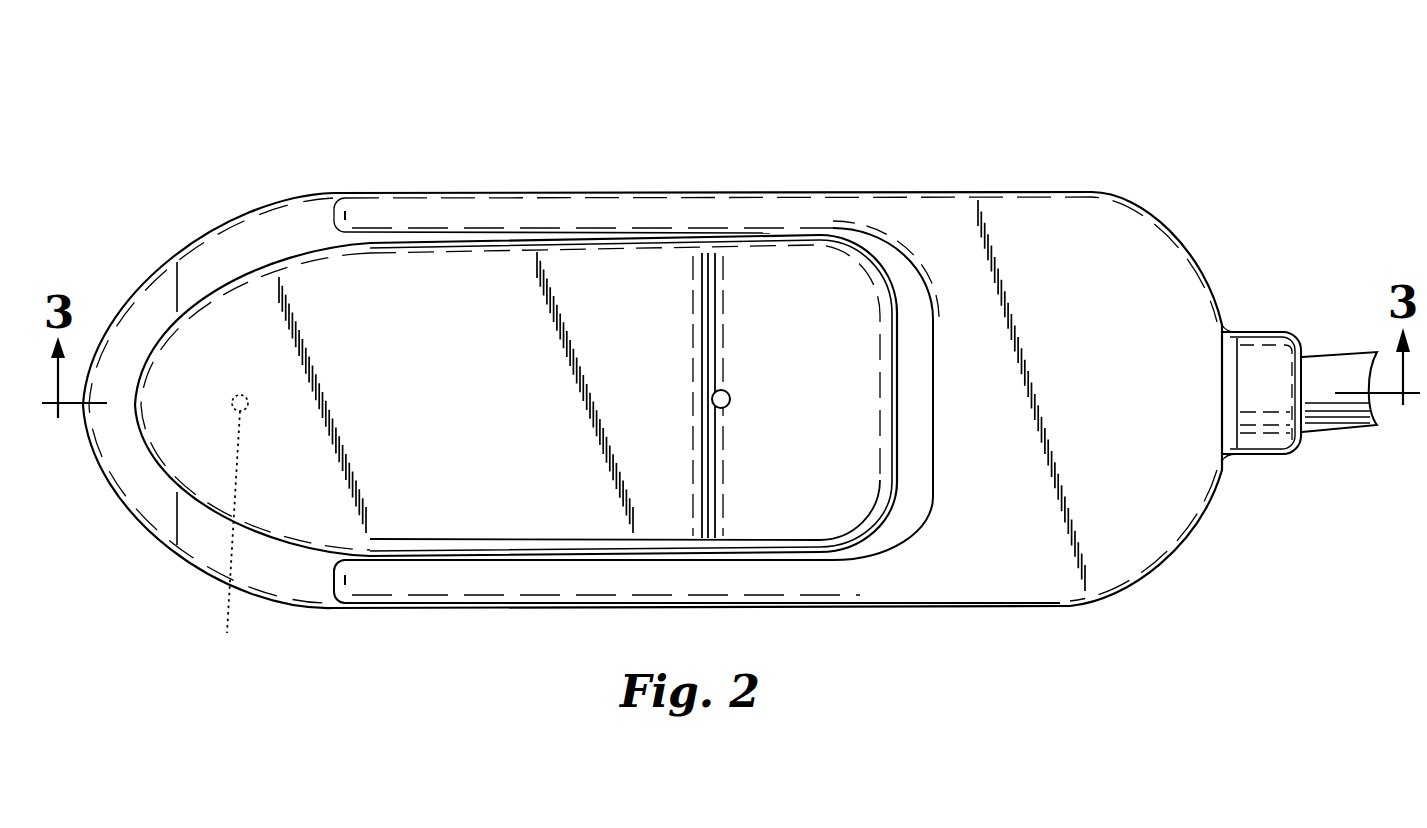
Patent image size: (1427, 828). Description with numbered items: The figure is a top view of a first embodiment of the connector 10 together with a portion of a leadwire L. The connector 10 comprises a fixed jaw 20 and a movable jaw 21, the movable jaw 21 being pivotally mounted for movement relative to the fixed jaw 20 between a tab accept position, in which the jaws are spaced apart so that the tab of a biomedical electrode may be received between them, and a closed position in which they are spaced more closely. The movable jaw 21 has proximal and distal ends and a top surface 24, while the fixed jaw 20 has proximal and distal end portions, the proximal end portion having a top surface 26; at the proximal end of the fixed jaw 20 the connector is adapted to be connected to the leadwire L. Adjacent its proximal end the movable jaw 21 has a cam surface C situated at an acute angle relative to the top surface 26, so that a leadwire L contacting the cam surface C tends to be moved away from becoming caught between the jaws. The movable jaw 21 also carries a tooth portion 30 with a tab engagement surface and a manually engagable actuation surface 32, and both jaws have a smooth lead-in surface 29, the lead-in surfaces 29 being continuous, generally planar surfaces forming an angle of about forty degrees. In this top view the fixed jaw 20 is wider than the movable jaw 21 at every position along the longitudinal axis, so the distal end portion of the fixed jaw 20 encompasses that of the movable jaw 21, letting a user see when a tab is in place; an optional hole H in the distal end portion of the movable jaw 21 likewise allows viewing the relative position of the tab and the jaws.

The connector 10 is at (745, 88).
The fixed jaw 20 is at (461, 628).
The movable jaw 21 is at (508, 266).
The top surface 24 is at (777, 278).
The top surface 26 is at (944, 333).
The smooth lead-in surface 29 is at (132, 318).
The tooth portion 30 is at (133, 469).
The manually engagable actuation surface 32 is at (675, 517).
The cam surface C is at (822, 512).
The hole H is at (233, 529).
The leadwire L is at (1333, 373).